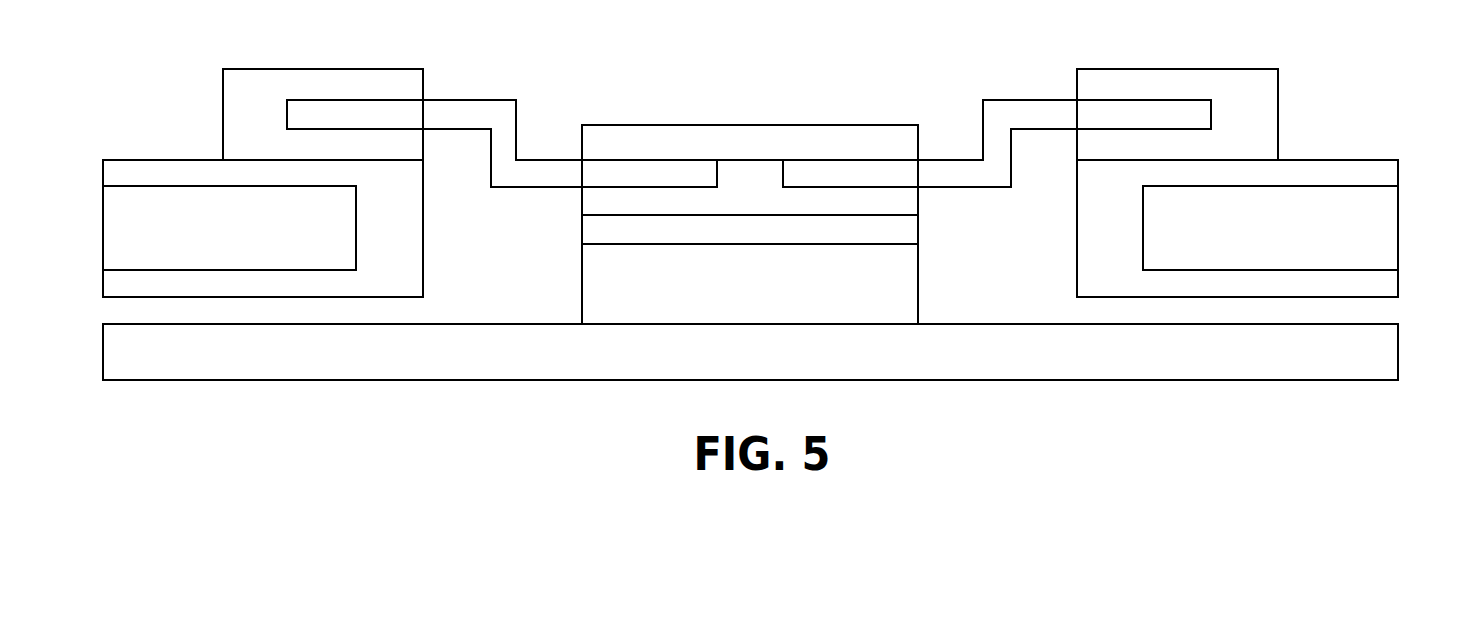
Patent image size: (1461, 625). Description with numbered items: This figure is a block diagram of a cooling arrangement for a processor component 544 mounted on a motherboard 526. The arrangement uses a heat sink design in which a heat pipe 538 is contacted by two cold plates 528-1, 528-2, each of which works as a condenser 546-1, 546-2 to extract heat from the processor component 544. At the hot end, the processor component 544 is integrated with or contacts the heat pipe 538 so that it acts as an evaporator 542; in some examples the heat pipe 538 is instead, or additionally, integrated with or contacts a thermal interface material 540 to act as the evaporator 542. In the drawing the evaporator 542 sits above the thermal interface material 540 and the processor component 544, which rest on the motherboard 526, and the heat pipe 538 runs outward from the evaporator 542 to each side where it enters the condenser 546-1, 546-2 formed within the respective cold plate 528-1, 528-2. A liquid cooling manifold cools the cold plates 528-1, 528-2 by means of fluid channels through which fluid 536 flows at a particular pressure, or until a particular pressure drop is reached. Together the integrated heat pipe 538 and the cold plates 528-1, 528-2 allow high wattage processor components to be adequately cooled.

The motherboard 526 is at (1398, 355).
The cold plate 528-1 is at (156, 160).
The cold plate 528-2 is at (1345, 160).
The fluid 536 is at (103, 223).
The heat pipe 538 is at (474, 99).
The thermal interface material 540 is at (918, 230).
The evaporator 542 is at (747, 125).
The processor component 544 is at (918, 289).
The condenser 546-1 is at (317, 68).
The condenser 546-2 is at (1178, 68).